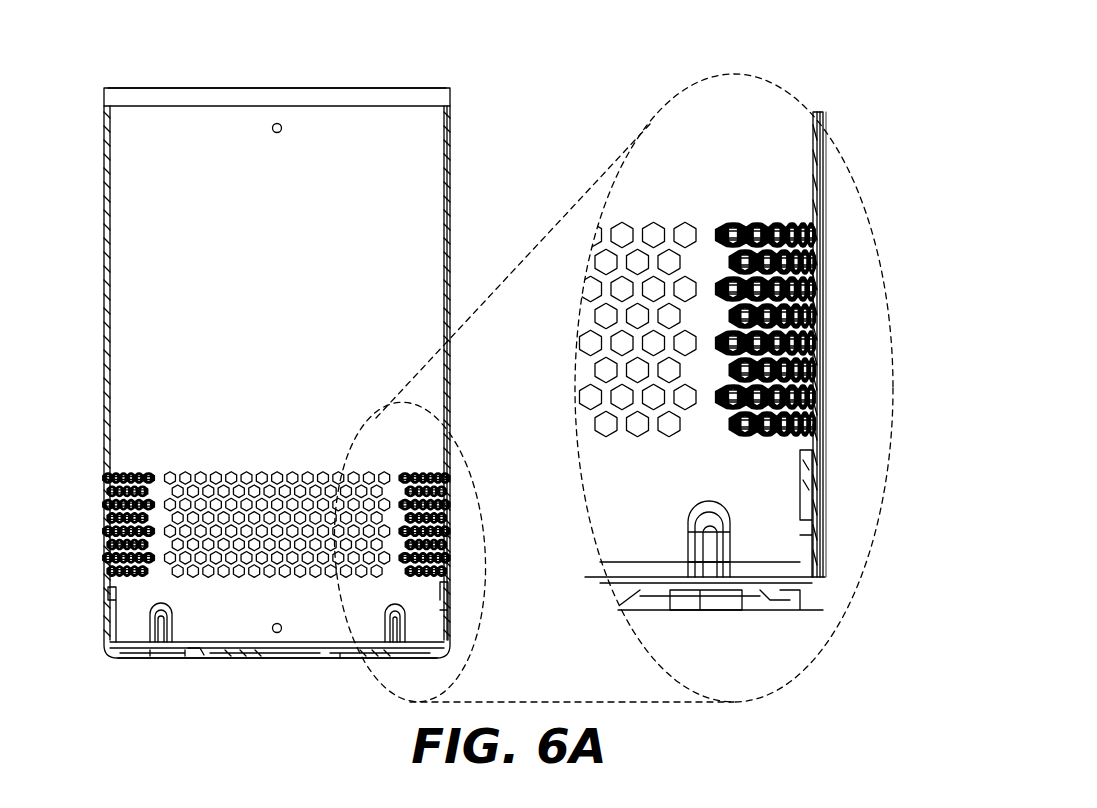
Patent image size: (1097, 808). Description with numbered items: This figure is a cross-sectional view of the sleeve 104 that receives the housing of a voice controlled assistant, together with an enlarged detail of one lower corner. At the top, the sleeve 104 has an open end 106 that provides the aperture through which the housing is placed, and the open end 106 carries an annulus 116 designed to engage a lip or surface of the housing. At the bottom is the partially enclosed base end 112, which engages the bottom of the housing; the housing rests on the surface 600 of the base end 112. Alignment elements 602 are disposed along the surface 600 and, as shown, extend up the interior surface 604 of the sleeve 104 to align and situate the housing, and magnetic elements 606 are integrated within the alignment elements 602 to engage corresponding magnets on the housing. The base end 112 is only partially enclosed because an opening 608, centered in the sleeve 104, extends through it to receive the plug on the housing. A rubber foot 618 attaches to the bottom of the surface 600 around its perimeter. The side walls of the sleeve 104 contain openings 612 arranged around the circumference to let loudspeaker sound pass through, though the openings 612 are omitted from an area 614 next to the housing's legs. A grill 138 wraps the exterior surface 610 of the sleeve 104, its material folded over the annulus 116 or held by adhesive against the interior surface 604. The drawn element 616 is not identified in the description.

The sleeve 104 is at (376, 58).
The open end 106 is at (146, 72).
The annulus 116 is at (430, 88).
The grill 138 is at (452, 150).
The area 614 is at (156, 466).
The alignment elements 602 is at (150, 622).
The magnetic elements 606 is at (162, 657).
The opening 608 is at (275, 660).
The surface 600 is at (360, 665).
The partially enclosed base end 112 is at (184, 667).
The rubber foot 618 is at (200, 664).
The side retention member 616 is at (460, 629).
The exterior surface 610 is at (818, 143).
The interior surface 604 is at (813, 197).
The openings 612 is at (836, 356).